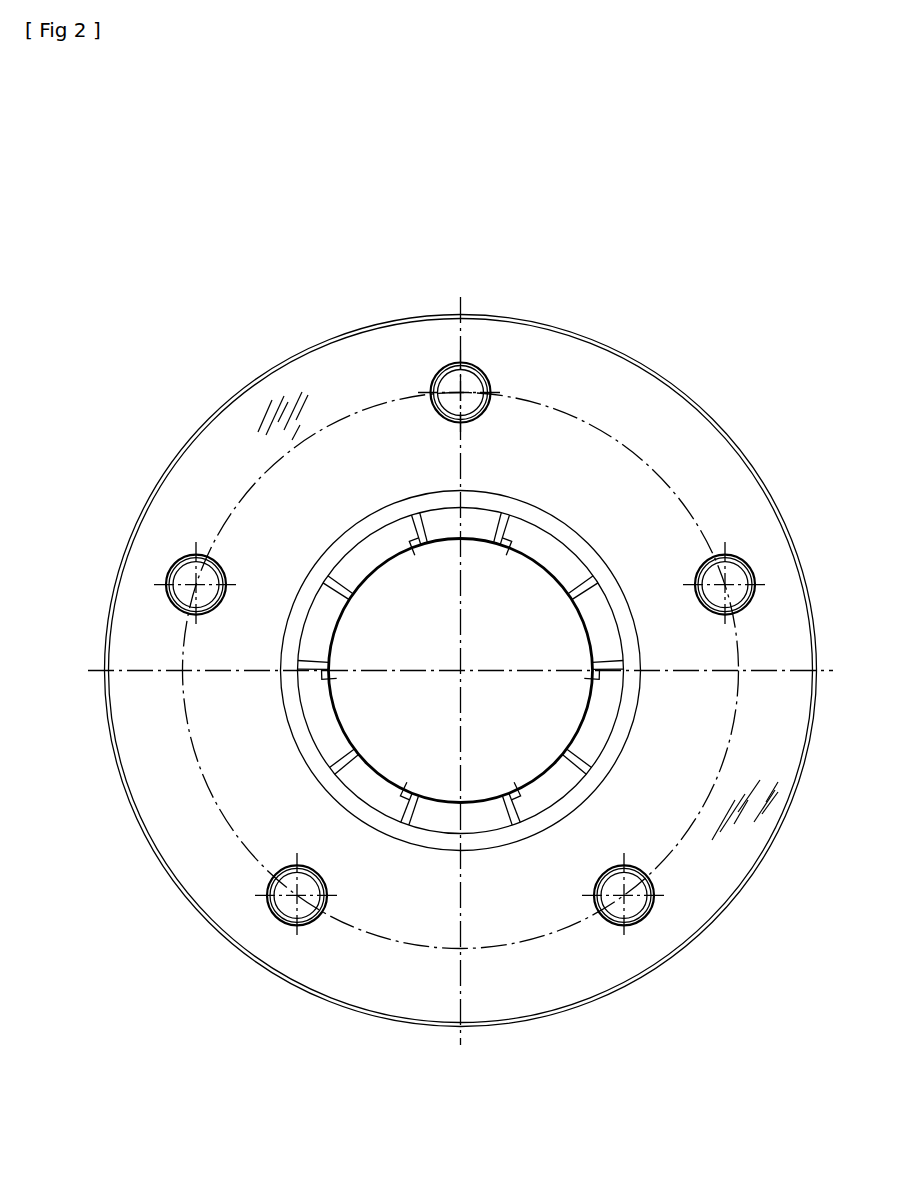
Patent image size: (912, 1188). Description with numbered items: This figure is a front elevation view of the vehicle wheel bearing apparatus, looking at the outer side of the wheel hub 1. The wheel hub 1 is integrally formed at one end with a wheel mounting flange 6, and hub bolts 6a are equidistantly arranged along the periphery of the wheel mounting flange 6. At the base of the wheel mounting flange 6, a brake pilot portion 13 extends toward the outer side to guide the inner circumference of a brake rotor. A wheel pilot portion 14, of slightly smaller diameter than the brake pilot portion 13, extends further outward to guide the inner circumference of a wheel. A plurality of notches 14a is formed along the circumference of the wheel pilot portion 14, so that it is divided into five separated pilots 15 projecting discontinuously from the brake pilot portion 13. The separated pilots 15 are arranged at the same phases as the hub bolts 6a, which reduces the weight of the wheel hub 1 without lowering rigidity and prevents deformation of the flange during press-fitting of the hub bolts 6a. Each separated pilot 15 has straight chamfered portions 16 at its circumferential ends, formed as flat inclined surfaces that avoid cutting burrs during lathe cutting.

The wheel hub 1 is at (216, 452).
The wheel mounting flange 6 is at (353, 357).
The hub bolt 6a is at (463, 380).
The brake pilot portion 13 is at (628, 580).
The wheel pilot portion 14 is at (318, 586).
The notch 14a is at (366, 560).
The separated pilot 15 is at (446, 522).
The chamfered portion 16 is at (410, 548).